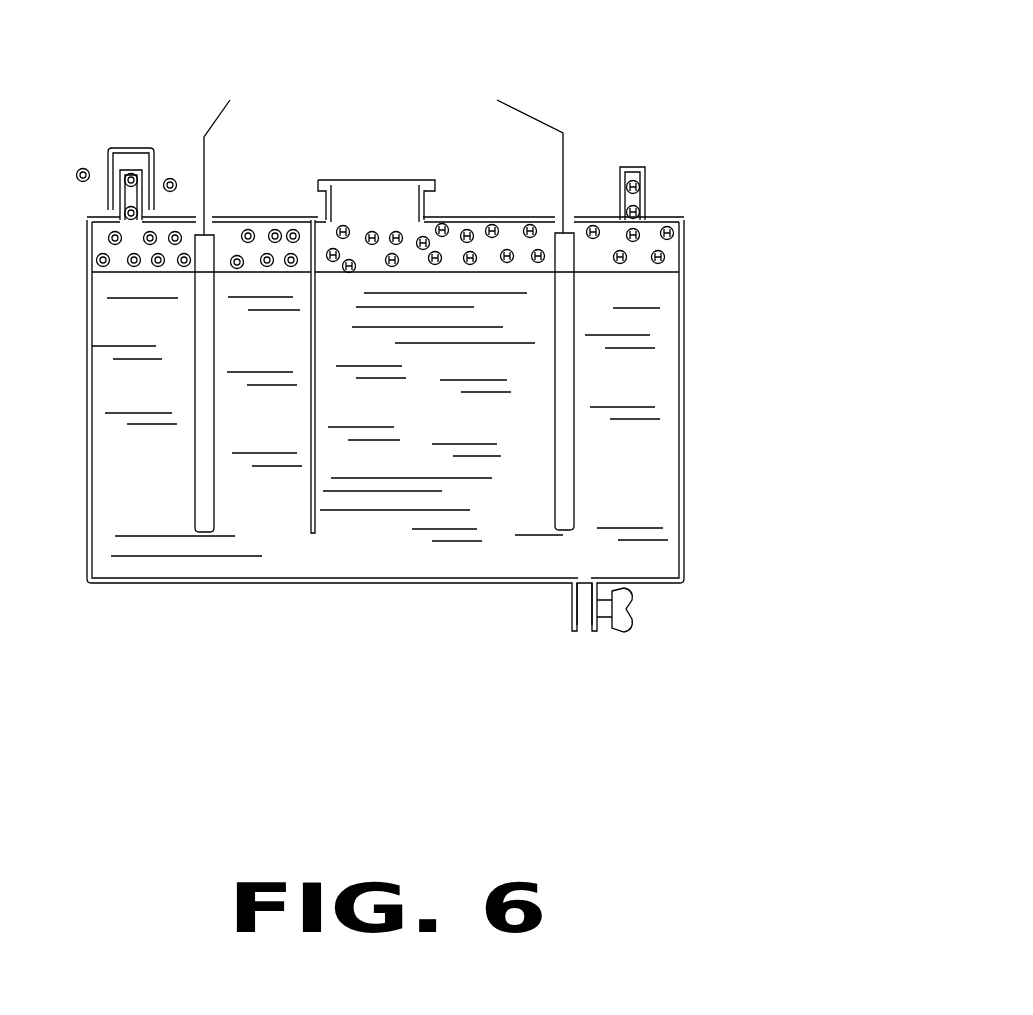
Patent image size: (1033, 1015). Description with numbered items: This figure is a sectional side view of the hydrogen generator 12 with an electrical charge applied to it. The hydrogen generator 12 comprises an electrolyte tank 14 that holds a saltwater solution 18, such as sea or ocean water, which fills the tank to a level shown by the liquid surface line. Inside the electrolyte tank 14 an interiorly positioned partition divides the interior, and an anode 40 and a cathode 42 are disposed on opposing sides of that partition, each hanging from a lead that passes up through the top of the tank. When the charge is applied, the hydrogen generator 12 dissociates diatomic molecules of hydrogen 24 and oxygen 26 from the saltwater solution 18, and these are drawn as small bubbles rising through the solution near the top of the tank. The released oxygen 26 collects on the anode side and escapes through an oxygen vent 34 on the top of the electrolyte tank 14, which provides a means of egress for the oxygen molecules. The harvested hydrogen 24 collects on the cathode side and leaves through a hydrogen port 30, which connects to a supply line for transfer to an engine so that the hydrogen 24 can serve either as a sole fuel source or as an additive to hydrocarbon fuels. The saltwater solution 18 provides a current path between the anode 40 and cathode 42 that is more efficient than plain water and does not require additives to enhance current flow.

The hydrogen generator 12 is at (547, 88).
The electrolyte tank 14 is at (672, 345).
The saltwater solution 18 is at (260, 535).
The hydrogen 24 is at (526, 228).
The oxygen molecules 26 is at (272, 229).
The hydrogen port 30 is at (636, 166).
The oxygen vent 34 is at (130, 148).
The anode 40 is at (232, 300).
The cathode 42 is at (513, 300).